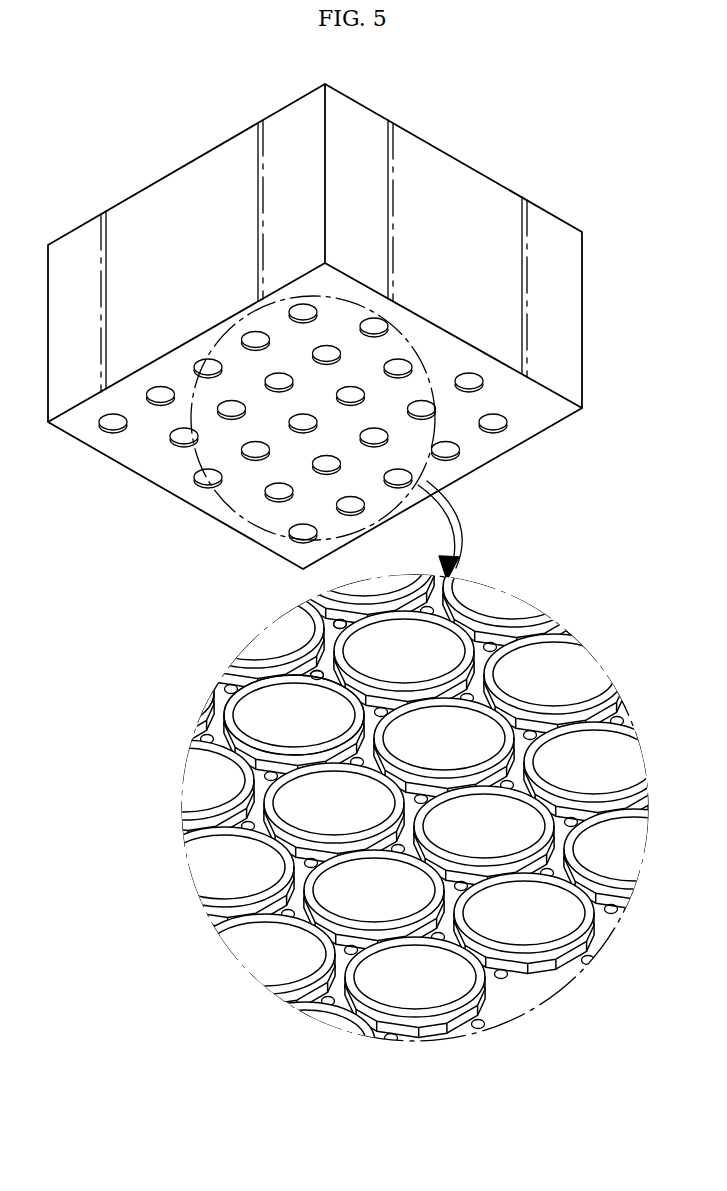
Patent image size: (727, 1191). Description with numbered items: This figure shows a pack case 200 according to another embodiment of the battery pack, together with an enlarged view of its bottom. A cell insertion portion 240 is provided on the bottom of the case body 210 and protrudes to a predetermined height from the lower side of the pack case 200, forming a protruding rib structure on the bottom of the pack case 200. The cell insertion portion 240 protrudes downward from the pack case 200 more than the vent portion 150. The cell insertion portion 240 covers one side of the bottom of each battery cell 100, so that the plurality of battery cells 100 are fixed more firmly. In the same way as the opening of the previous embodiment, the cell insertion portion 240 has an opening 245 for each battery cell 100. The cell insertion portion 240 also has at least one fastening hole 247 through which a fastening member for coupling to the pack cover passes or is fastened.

The pack case 200 is at (146, 135).
The case body 210 is at (137, 218).
The cell insertion portion 240 is at (256, 635).
The opening 245 is at (234, 672).
The battery cell 100 is at (277, 717).
The fastening hole 247 is at (203, 738).
The vent portion 150 is at (233, 768).